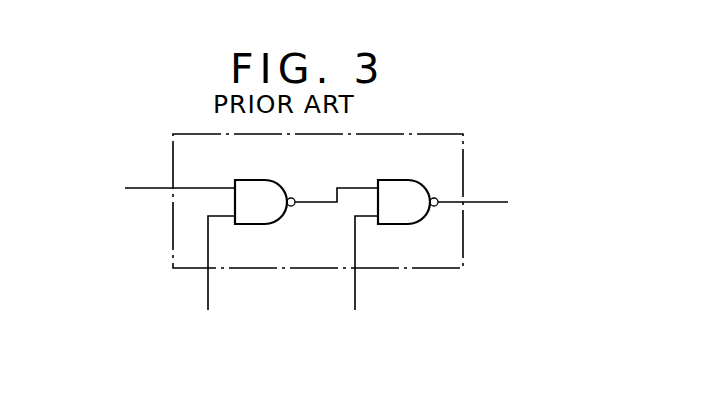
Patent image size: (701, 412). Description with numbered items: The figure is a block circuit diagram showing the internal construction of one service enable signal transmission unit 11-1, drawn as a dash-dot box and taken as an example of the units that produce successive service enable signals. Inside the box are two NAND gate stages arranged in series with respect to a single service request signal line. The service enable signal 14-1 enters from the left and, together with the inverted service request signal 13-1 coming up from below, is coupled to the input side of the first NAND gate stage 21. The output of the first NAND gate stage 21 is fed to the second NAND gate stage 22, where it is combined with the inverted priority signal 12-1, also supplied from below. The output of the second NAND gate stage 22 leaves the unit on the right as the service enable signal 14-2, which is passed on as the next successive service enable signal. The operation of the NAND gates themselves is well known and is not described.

The service enable signal transmission unit 11-1 is at (450, 133).
The first NAND gate stage 21 is at (266, 193).
The second NAND gate stage 22 is at (404, 193).
The service enable signal 14-1 is at (151, 187).
The service enable signal 14-2 is at (502, 202).
The inverted service request signal 13-1 is at (208, 313).
The inverted priority signal 12-1 is at (353, 313).